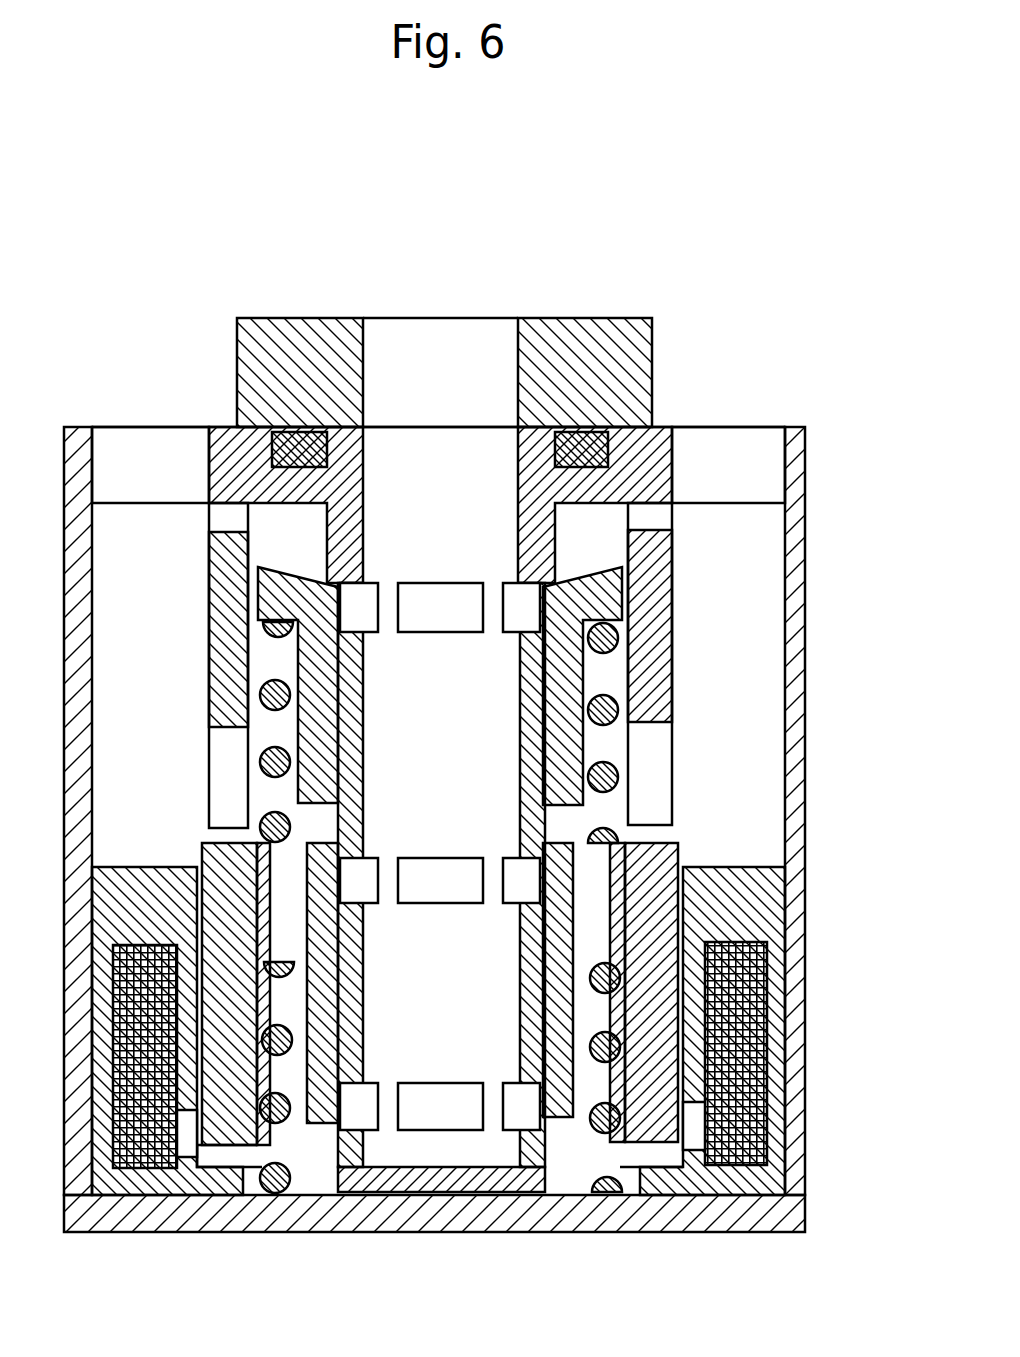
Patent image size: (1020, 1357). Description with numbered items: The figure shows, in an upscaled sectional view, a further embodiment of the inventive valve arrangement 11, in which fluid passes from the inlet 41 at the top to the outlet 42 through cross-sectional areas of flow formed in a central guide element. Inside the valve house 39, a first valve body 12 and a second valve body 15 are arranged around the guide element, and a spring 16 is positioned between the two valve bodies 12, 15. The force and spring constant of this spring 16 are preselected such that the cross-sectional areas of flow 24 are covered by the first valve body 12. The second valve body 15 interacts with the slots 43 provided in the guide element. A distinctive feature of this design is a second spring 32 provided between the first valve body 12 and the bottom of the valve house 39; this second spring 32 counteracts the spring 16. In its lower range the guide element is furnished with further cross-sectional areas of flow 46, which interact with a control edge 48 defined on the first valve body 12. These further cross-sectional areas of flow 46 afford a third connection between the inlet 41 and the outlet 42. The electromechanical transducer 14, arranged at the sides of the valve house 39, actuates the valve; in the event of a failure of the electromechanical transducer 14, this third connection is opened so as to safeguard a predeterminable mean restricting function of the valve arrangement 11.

The valve arrangement 11 is at (808, 465).
The first valve body 12 is at (560, 1097).
The electromechanical transducer 14 is at (775, 1015).
The second valve body 15 is at (597, 603).
The spring 16 is at (610, 700).
The cross-sectional areas of flow 24 is at (434, 878).
The second spring 32 is at (275, 1194).
The valve house 39 is at (140, 1207).
The inlet 41 is at (486, 356).
The outlet 42 is at (742, 440).
The slots 43 is at (434, 592).
The further cross-sectional areas of flow 46 is at (434, 1100).
The control edge 48 is at (323, 1125).